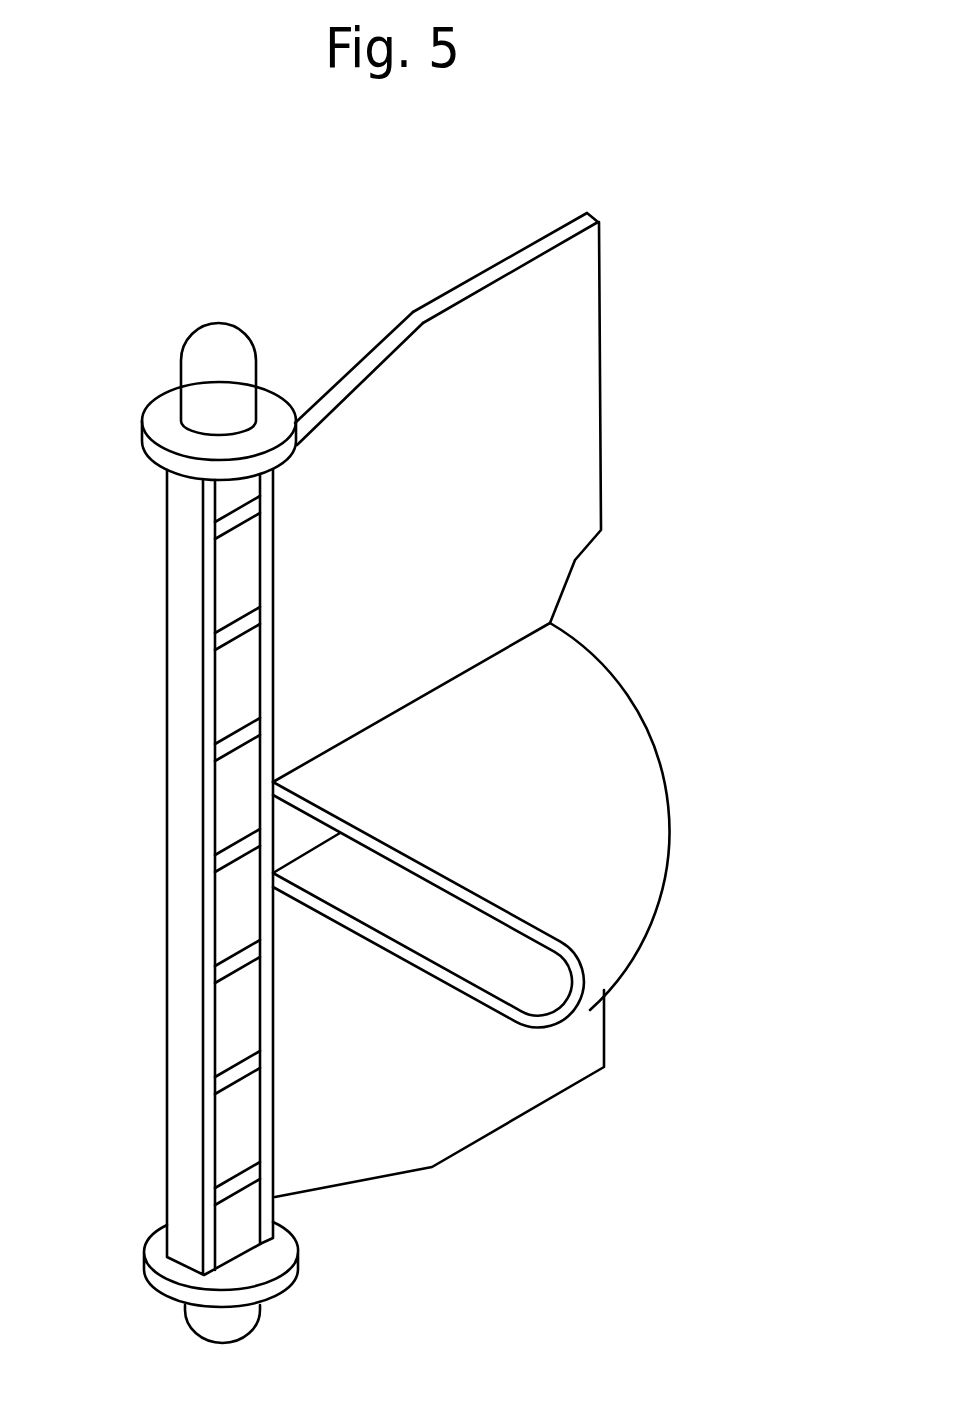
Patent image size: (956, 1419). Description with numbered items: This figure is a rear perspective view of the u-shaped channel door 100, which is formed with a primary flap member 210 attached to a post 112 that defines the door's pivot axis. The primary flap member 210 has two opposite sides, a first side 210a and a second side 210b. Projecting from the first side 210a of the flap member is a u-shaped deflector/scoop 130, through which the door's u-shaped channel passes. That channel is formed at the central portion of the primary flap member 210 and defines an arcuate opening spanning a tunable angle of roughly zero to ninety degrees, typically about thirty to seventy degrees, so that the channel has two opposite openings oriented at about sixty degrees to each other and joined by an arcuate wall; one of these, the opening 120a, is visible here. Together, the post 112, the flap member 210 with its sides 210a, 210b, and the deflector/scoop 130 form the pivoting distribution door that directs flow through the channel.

The u-shaped channel door 100 is at (525, 698).
The post 112 is at (200, 361).
The opening 120a is at (415, 913).
The u-shaped deflector/scoop 130 is at (632, 753).
The primary flap member 210 is at (438, 698).
The first side 210a is at (532, 287).
The second side 210b is at (433, 300).